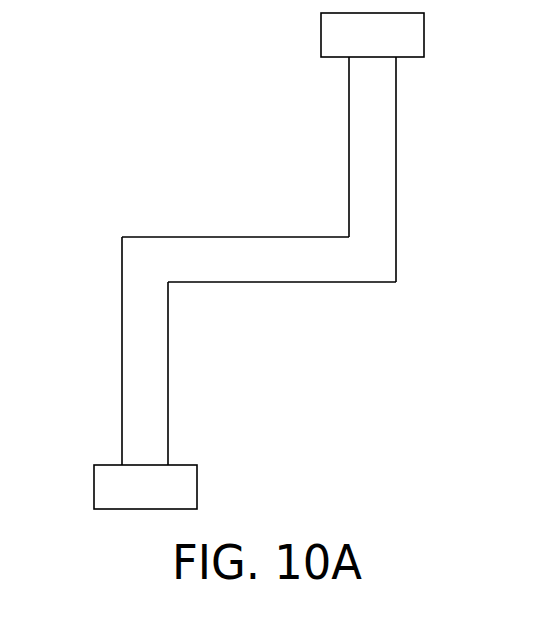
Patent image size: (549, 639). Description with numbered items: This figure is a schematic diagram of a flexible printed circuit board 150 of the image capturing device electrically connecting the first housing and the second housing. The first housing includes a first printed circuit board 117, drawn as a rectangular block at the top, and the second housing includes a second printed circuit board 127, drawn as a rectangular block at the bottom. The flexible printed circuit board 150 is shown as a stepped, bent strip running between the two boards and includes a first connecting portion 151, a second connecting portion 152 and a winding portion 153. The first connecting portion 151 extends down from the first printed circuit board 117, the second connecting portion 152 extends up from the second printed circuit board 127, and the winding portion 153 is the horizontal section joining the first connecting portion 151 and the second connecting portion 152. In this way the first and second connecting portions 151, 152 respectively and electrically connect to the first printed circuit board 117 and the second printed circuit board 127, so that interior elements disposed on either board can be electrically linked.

The first printed circuit board 117 is at (335, 33).
The second printed circuit board 127 is at (110, 490).
The flexible printed circuit board 150 is at (250, 165).
The first connecting portion 151 is at (377, 72).
The second connecting portion 152 is at (147, 428).
The winding portion 153 is at (225, 267).